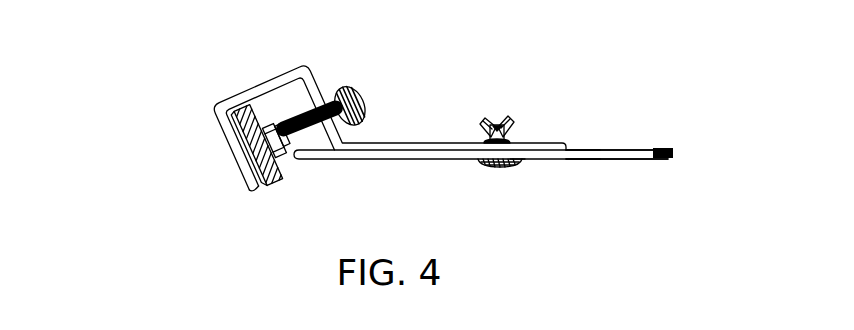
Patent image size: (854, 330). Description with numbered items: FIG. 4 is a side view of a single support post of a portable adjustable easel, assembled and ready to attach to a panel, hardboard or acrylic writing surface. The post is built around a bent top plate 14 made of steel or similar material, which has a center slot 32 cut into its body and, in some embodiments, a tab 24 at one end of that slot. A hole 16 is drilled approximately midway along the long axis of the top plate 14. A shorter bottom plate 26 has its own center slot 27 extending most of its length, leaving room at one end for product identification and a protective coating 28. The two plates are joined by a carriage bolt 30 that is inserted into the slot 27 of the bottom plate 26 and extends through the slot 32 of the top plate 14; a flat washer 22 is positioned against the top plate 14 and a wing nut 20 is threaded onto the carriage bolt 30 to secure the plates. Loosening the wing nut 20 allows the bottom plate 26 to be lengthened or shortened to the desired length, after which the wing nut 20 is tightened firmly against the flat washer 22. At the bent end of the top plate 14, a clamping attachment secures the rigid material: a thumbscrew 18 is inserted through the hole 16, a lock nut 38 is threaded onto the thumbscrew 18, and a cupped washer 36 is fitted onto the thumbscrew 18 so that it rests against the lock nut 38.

The top plate 14 is at (265, 76).
The hole 16 is at (328, 112).
The thumbscrew 18 is at (366, 100).
The wing nut 20 is at (513, 120).
The flat washer 22 is at (513, 141).
The tab 24 is at (523, 162).
The bottom plate 26 is at (612, 159).
The center slot 27 is at (569, 159).
The protective coating 28 is at (665, 159).
The carriage bolt 30 is at (500, 167).
The center slot 32 is at (427, 143).
The cupped washer 36 is at (270, 190).
The lock nut 38 is at (284, 158).